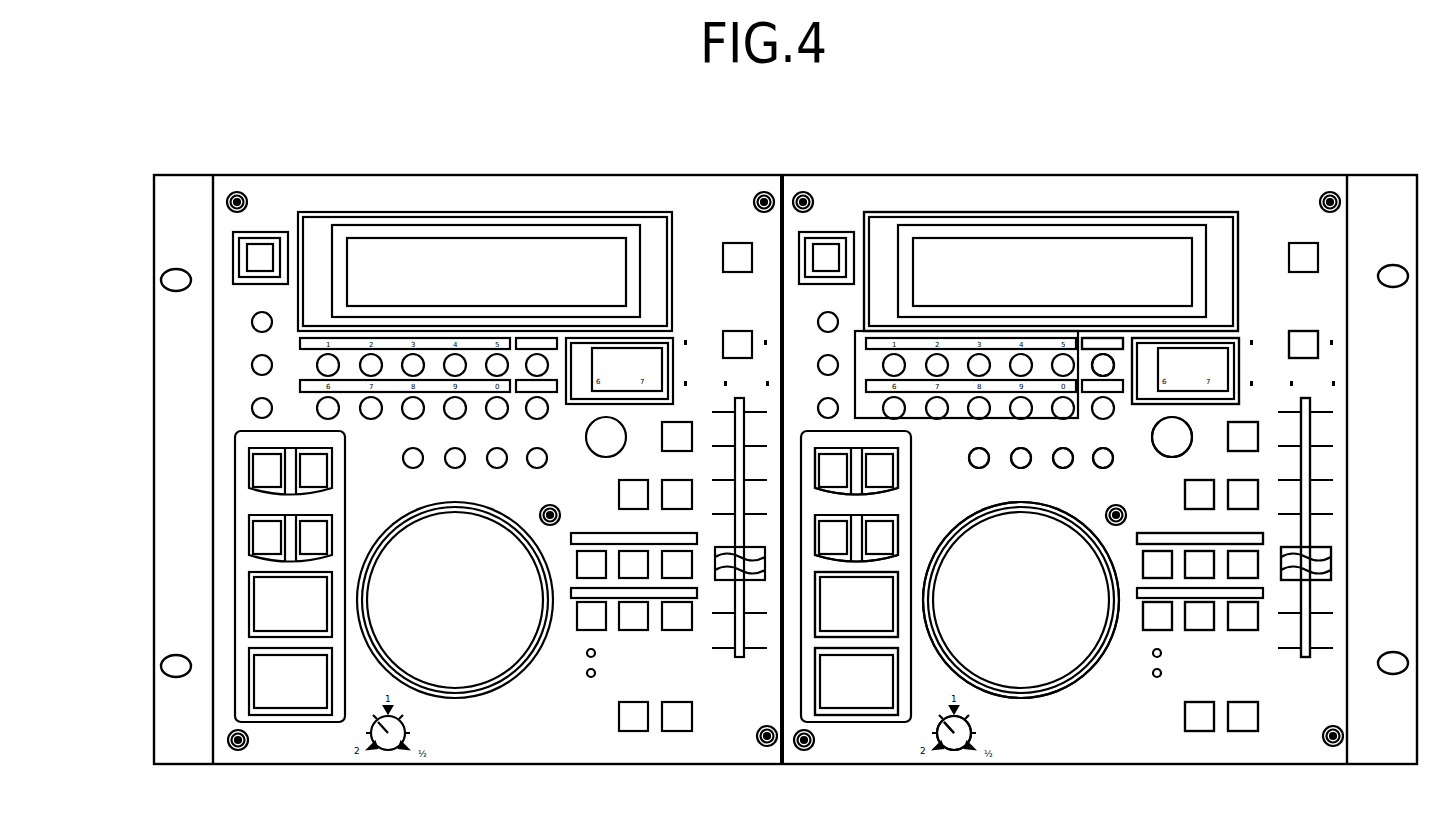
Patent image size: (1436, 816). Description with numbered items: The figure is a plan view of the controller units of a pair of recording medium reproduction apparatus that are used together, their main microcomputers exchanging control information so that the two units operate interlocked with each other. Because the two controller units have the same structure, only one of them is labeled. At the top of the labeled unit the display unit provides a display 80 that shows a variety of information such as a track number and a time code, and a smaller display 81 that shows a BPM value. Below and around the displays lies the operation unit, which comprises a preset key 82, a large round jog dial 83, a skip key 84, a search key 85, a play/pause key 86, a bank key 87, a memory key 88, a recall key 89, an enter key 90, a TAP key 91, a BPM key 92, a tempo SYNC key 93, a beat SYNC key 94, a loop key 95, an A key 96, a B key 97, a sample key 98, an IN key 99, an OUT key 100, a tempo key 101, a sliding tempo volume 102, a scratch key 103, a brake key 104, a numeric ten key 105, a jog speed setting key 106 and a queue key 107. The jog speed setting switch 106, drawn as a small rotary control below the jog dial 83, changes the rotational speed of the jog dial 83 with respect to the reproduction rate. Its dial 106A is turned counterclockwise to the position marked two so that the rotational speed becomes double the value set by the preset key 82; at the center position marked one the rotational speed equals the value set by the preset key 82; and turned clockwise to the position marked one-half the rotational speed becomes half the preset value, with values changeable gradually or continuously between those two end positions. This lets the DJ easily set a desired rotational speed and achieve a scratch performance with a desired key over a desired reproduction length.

The display 80 is at (1180, 240).
The display 81 is at (1232, 372).
The preset key 82 is at (979, 469).
The jog dial 83 is at (1018, 690).
The skip key 84 is at (900, 488).
The search key 85 is at (900, 522).
The play/pause key 86 is at (870, 700).
The bank key 87 is at (1100, 340).
The memory key 88 is at (1021, 469).
The recall key 89 is at (1063, 469).
The enter key 90 is at (1103, 469).
The TAP key 91 is at (1163, 451).
The BPM key 92 is at (1228, 425).
The tempo SYNC key 93 is at (1205, 480).
The beat SYNC key 94 is at (1241, 480).
The loop key 95 is at (1143, 556).
The A key 96 is at (1199, 551).
The B key 97 is at (1252, 556).
The sample key 98 is at (1145, 630).
The IN key 99 is at (1191, 632).
The OUT key 100 is at (1240, 632).
The tempo key 101 is at (1303, 331).
The tempo volume 102 is at (1331, 562).
The scratch key 103 is at (1185, 712).
The brake key 104 is at (1252, 715).
The ten key 105 is at (946, 430).
The jog speed setting key 106 is at (944, 723).
The dial 106A is at (965, 742).
The queue key 107 is at (880, 602).